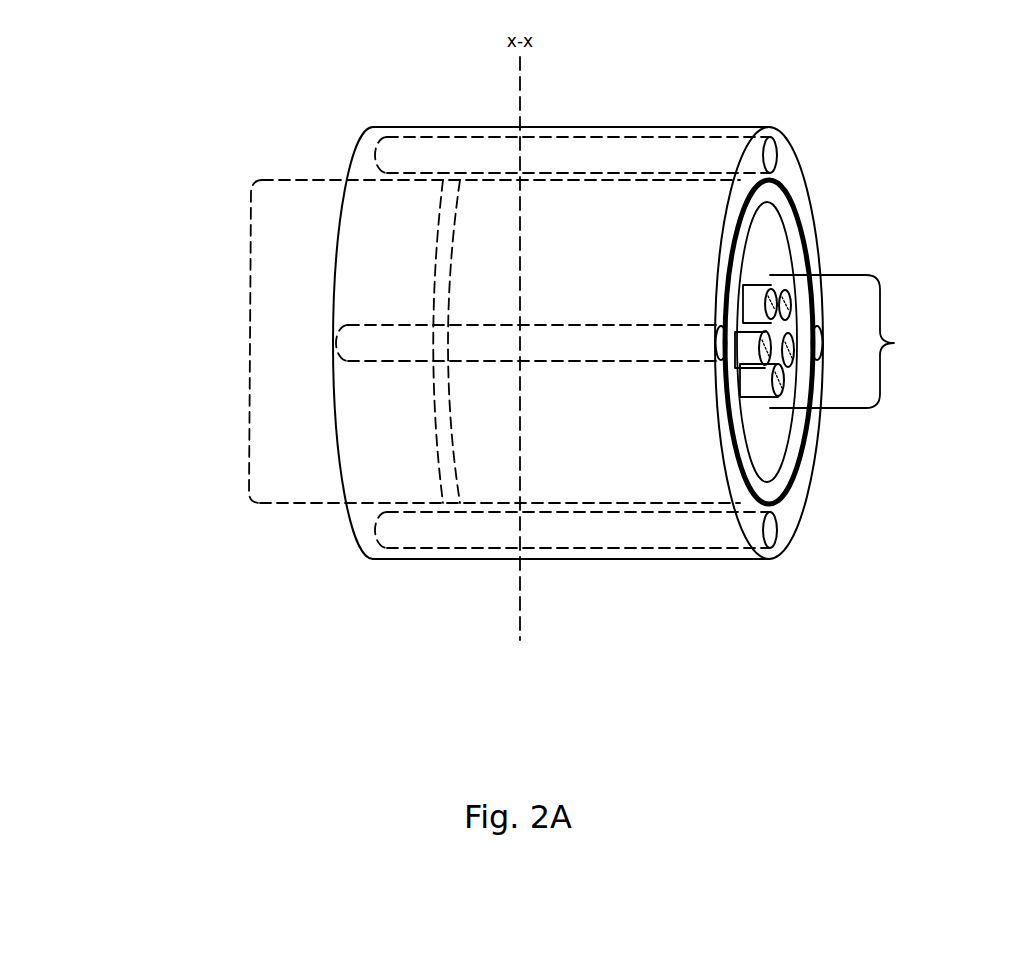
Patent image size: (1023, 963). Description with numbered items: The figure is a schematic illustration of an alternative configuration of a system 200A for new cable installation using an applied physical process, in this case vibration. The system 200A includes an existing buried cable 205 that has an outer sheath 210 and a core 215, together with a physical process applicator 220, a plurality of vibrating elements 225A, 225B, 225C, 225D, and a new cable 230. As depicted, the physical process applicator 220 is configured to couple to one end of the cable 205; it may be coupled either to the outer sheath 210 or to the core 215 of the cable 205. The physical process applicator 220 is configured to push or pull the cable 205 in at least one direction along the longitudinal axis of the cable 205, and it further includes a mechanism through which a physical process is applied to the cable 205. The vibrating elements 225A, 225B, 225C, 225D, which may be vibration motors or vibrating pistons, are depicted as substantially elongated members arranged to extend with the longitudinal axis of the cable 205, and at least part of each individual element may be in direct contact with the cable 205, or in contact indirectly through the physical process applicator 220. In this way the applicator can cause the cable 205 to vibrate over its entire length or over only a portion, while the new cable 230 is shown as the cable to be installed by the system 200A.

The system 200A is at (852, 750).
The existing buried cable 205 is at (662, 180).
The outer sheath 210 is at (785, 187).
The core 215 is at (861, 341).
The physical process applicator 220 is at (577, 127).
The vibrating element 225A is at (778, 154).
The vibrating element 225B is at (778, 530).
The vibrating element 225C is at (715, 343).
The vibrating element 225D is at (823, 343).
The new cable 230 is at (249, 279).